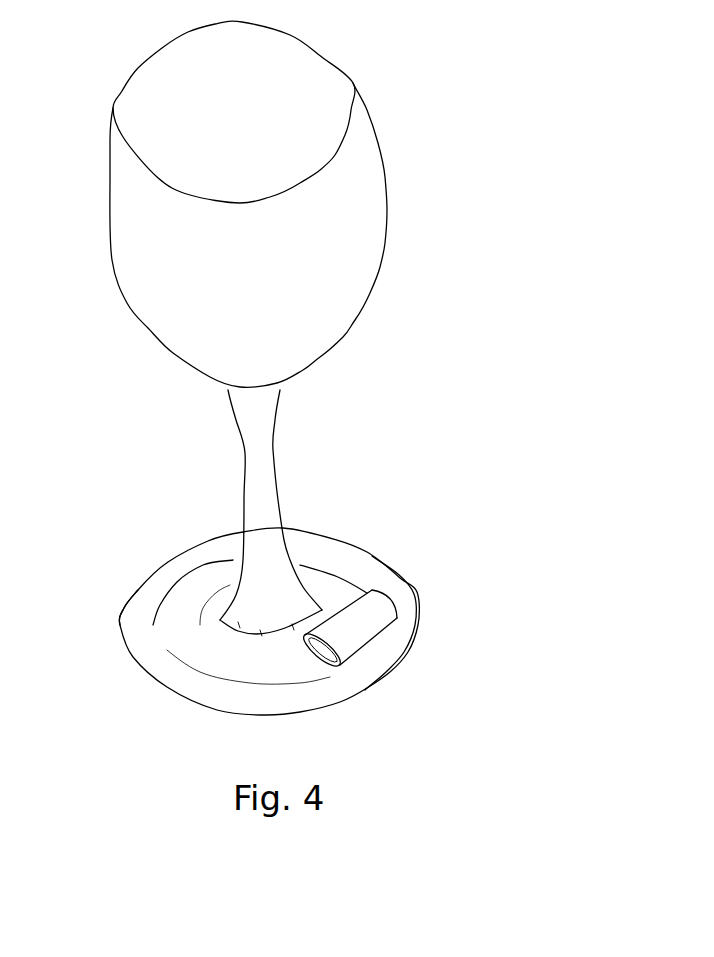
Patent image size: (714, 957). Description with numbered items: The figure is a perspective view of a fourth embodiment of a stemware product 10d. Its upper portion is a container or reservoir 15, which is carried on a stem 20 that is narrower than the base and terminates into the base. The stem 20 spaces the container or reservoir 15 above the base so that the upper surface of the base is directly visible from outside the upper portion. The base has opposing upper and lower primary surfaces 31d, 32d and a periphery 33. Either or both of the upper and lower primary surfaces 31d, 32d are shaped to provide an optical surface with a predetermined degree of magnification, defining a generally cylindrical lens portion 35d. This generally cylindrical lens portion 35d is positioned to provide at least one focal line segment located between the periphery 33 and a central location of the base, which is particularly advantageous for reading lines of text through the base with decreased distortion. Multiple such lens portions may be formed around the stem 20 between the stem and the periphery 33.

The stemware product 10d is at (448, 150).
The container or reservoir 15 is at (338, 268).
The stem 20 is at (265, 450).
The upper primary surface 31d is at (343, 557).
The lower primary surface 32d is at (342, 699).
The periphery 33 is at (120, 635).
The generally cylindrical lens portion 35d is at (418, 610).